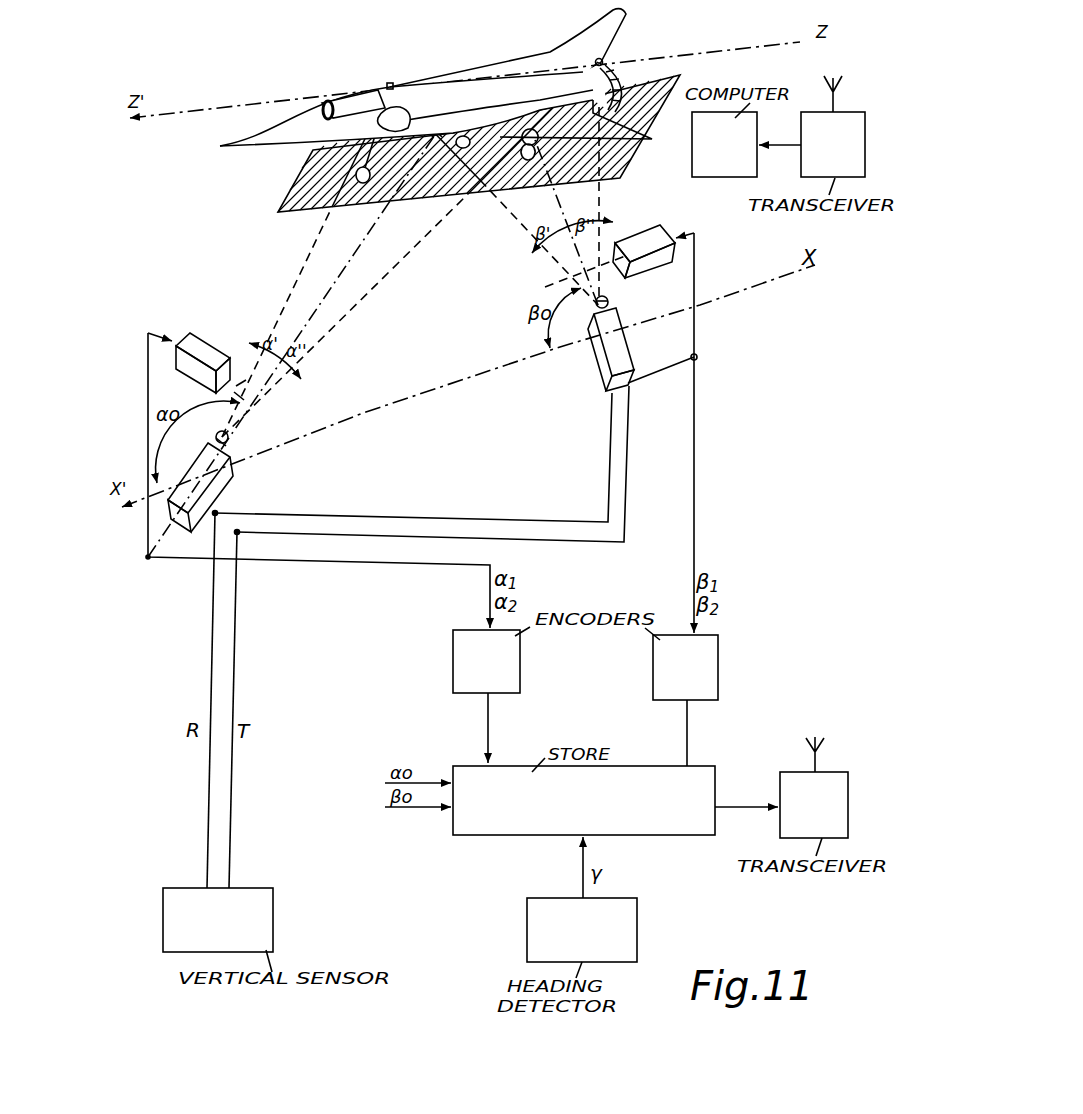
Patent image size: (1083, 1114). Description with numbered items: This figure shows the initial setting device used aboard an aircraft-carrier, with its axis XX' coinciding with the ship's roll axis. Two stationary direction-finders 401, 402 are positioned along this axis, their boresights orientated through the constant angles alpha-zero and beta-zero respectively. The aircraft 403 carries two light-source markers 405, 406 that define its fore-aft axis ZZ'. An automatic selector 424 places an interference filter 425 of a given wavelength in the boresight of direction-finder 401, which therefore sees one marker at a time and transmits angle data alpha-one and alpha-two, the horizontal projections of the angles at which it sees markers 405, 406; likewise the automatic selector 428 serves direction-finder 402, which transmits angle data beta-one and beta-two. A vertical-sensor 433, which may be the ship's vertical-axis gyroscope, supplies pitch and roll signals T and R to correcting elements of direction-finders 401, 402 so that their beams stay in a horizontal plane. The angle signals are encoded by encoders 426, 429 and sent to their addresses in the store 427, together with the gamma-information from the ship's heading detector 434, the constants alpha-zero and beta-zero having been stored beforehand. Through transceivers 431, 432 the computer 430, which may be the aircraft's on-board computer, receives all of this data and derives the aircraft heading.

The direction-finder 401 is at (216, 478).
The direction-finder 402 is at (603, 353).
The aircraft 403 is at (478, 95).
The aircraft marker 405 is at (386, 84).
The aircraft marker 406 is at (603, 60).
The automatic selector 424 is at (202, 353).
The interference filter 425 is at (262, 398).
The encoder 426 is at (486, 661).
The store 427 is at (584, 800).
The automatic selector 428 is at (637, 240).
The encoder 429 is at (685, 667).
The computer 430 is at (724, 144).
The transceiver 431 is at (814, 787).
The transceiver 432 is at (833, 126).
The vertical-sensor 433 is at (218, 920).
The heading detector 434 is at (582, 930).